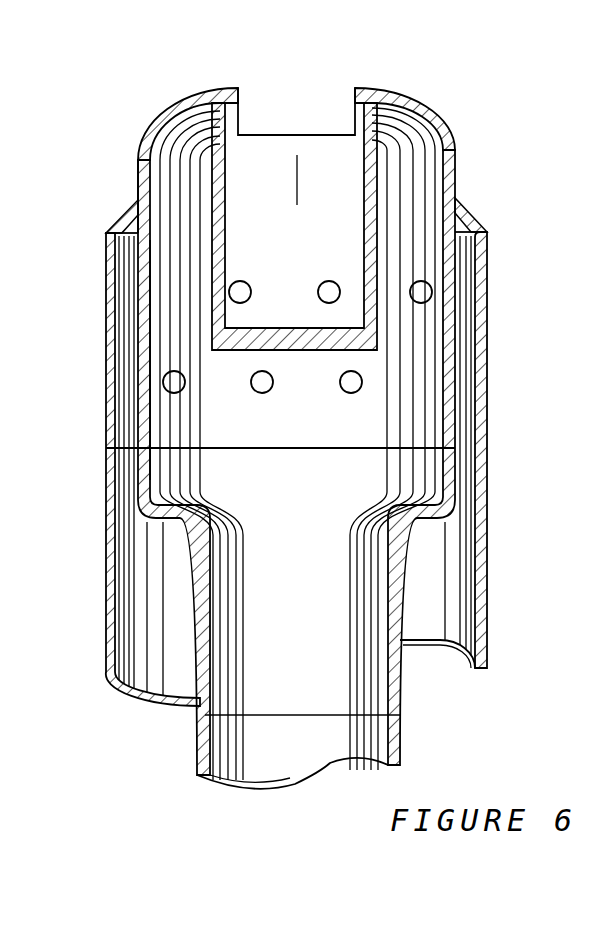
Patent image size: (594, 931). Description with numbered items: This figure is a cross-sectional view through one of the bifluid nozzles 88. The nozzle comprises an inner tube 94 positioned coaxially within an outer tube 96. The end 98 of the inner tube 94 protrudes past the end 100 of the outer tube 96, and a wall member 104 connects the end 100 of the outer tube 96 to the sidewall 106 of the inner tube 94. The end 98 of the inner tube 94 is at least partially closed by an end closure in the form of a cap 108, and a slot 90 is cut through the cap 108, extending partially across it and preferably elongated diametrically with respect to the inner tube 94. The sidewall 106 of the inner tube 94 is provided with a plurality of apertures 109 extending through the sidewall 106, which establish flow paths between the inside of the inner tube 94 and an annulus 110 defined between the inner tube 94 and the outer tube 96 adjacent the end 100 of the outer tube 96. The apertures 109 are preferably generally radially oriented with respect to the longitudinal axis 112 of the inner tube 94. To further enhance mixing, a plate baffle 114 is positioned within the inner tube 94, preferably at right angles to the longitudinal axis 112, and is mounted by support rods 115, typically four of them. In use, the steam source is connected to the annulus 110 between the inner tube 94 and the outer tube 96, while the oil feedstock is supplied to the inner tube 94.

The bifluid nozzle 88 is at (139, 146).
The slot 90 is at (293, 132).
The inner tube 94 is at (140, 352).
The outer tube 96 is at (107, 584).
The end of the inner tube 98 is at (176, 106).
The end of the outer tube 100 is at (108, 236).
The wall member 104 is at (120, 226).
The sidewall of the inner tube 106 is at (138, 172).
The cap 108 is at (387, 91).
The apertures 109 is at (176, 371).
The annulus 110 is at (106, 449).
The longitudinal axis 112 is at (298, 173).
The plate baffle 114 is at (380, 348).
The support rods 115 is at (378, 193).